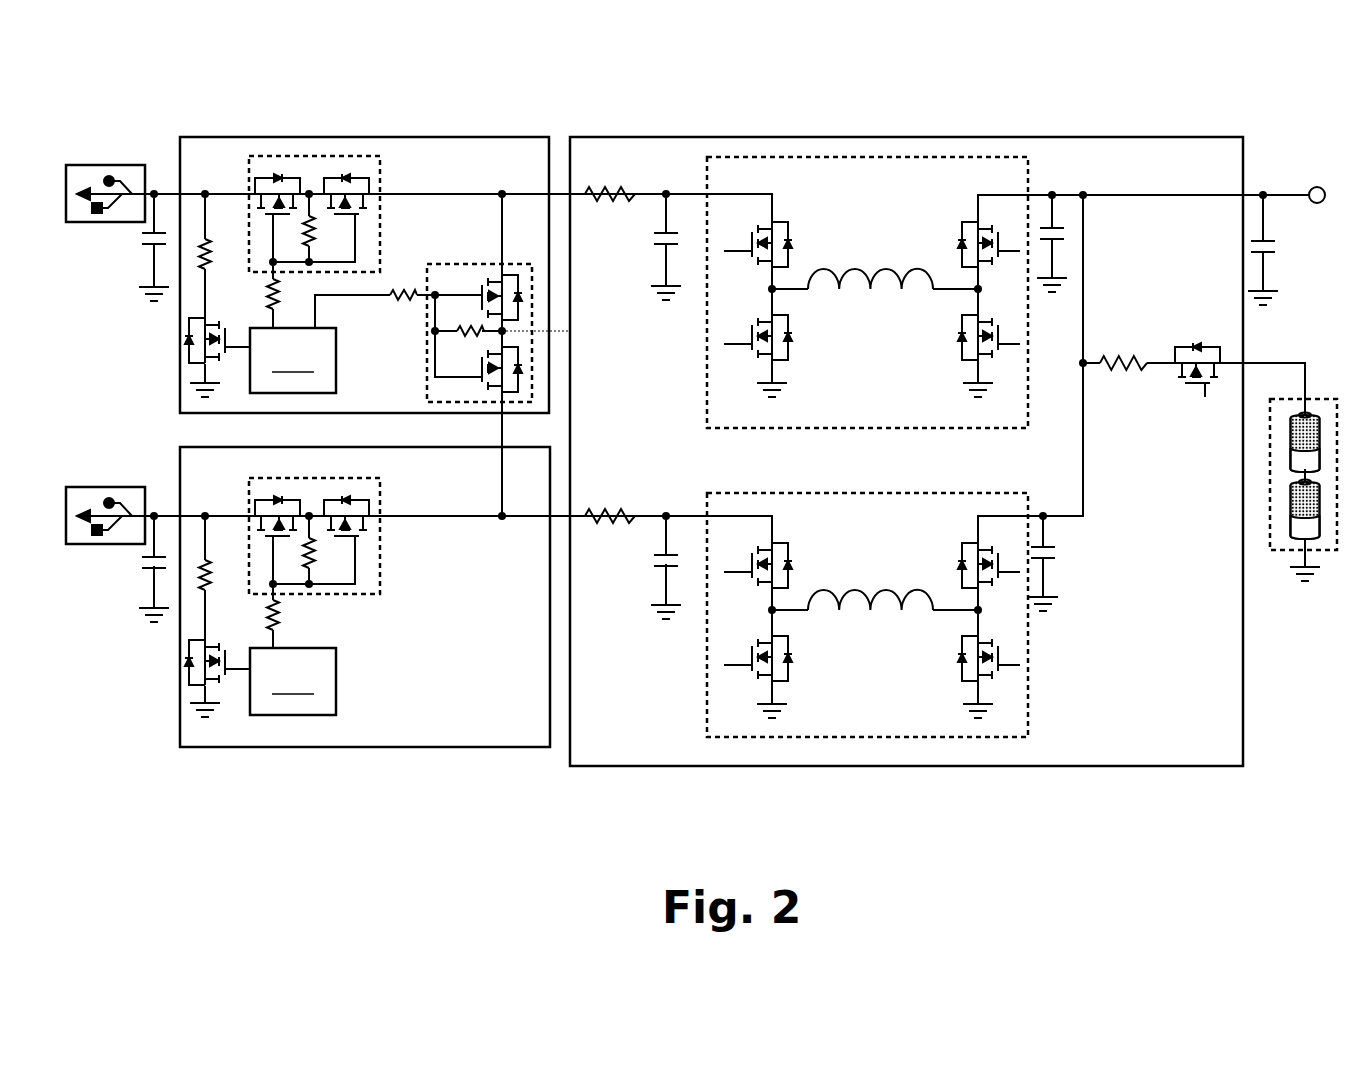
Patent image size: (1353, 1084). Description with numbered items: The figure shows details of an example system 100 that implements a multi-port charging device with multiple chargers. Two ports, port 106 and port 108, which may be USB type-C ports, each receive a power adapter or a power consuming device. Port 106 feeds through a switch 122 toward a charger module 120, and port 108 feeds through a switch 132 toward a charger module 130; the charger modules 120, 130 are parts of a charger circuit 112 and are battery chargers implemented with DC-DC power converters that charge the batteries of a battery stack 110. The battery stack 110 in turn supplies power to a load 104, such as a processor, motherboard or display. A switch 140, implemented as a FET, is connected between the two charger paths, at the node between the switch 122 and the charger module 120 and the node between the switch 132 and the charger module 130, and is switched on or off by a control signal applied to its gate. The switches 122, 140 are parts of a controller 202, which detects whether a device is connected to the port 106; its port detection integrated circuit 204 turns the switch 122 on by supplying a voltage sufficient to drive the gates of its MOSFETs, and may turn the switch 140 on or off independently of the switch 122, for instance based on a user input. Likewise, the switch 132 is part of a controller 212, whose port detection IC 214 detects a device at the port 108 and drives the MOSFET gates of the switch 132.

The system 100 is at (531, 859).
The load 104 is at (1319, 179).
The port 106 is at (85, 165).
The port 108 is at (85, 487).
The battery stack 110 is at (1280, 552).
The charger circuit 112 is at (862, 137).
The charger module 120 is at (707, 385).
The switch 122 is at (382, 212).
The charger module 130 is at (707, 697).
The switch 132 is at (378, 535).
The switch 140 is at (426, 385).
The controller 202 is at (325, 137).
The port detection integrated circuit 204 is at (293, 360).
The controller 212 is at (320, 747).
The port detection IC 214 is at (293, 681).